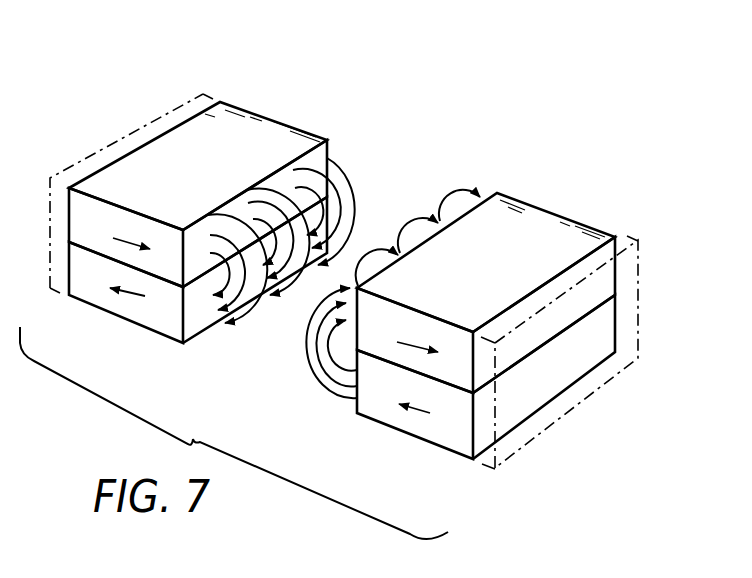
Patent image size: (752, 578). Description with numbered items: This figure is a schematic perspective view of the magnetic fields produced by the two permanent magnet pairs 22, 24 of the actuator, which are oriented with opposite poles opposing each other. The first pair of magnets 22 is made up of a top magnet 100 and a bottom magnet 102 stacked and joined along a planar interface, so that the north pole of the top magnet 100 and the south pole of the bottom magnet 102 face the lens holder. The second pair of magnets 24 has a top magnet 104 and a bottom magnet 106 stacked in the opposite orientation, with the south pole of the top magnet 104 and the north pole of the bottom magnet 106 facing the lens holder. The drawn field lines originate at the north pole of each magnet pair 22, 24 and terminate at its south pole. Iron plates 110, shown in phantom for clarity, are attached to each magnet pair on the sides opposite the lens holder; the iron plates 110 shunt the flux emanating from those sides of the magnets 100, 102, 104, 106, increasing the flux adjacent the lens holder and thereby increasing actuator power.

The first pair of magnets 22 is at (212, 216).
The second pair of magnets 24 is at (510, 309).
The top magnet 100 is at (123, 178).
The bottom magnet 102 is at (110, 309).
The top magnet 104 is at (600, 287).
The bottom magnet 106 is at (593, 340).
The iron plates 110 is at (162, 117).